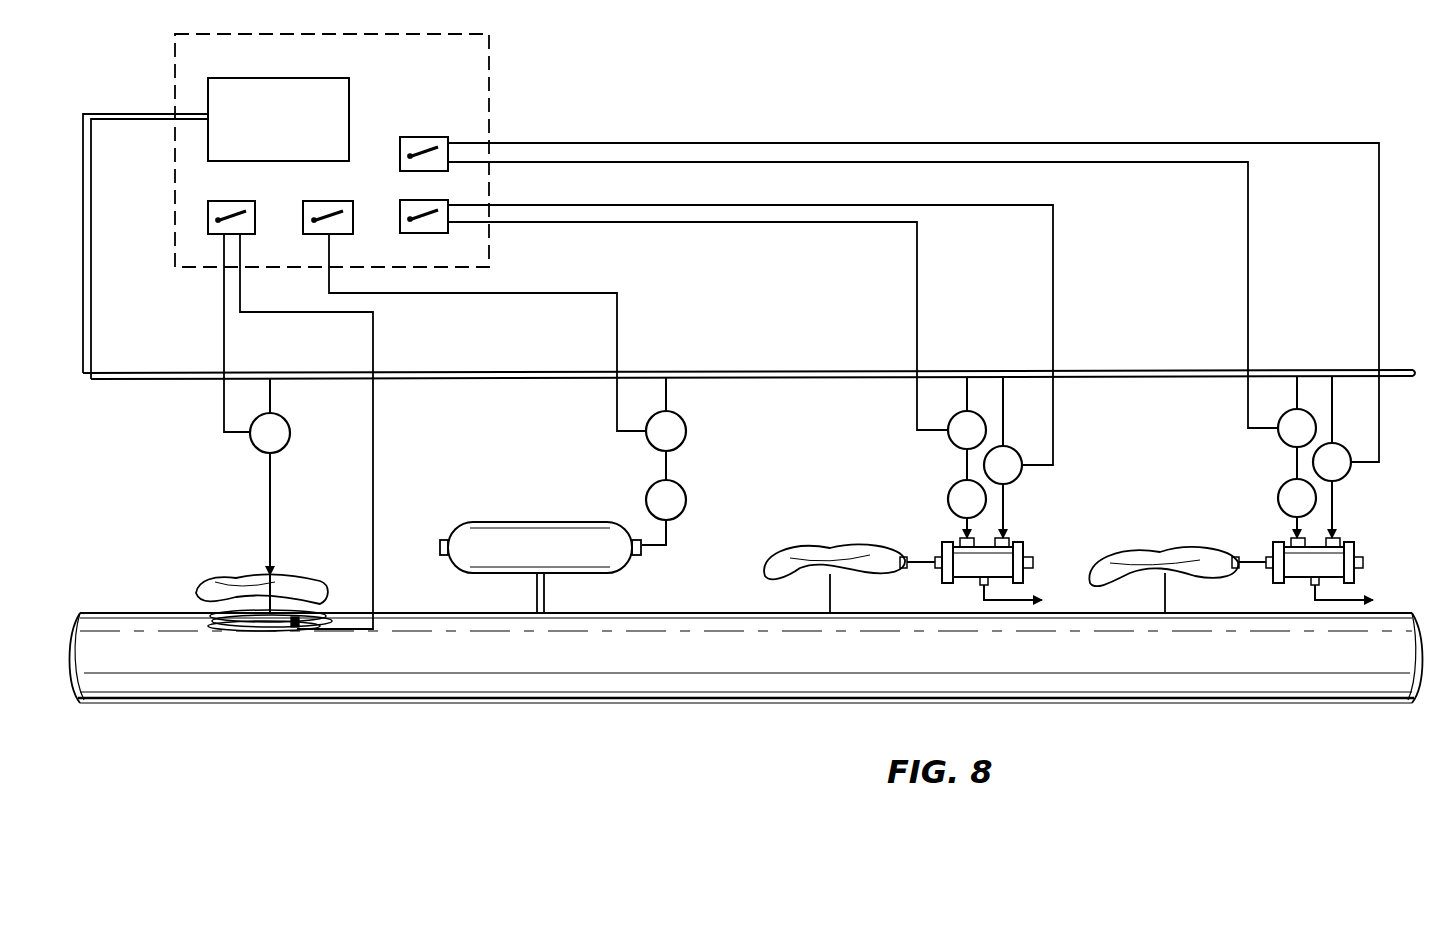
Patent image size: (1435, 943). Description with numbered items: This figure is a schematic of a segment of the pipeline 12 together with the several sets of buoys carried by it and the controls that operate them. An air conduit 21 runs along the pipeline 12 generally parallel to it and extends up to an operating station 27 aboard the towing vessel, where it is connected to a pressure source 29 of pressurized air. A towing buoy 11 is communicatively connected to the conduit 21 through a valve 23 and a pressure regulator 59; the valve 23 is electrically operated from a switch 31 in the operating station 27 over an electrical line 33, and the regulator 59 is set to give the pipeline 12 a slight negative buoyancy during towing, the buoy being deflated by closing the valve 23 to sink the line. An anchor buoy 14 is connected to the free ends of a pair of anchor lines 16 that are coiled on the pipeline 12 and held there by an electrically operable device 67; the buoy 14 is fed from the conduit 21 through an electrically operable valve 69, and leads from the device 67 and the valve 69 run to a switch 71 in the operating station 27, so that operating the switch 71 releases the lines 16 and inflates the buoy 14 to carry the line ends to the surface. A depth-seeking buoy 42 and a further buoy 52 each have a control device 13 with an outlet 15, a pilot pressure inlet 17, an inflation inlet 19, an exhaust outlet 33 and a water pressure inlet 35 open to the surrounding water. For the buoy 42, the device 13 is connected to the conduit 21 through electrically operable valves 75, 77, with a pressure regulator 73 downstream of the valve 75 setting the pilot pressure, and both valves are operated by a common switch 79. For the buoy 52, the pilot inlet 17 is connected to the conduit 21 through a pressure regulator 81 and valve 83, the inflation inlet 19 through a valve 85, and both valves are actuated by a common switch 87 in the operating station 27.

The towing buoy 11 is at (506, 522).
The pipeline 12 is at (736, 687).
The control device 13 is at (1149, 548).
The anchor buoy 14 is at (223, 575).
The outlet 15 is at (935, 558).
The anchor lines 16 is at (226, 636).
The pilot pressure inlet 17 is at (969, 547).
The inflation inlet 19 is at (1009, 543).
The conduit 21 is at (795, 370).
The valve 23 is at (688, 431).
The operating station 27 is at (492, 68).
The pressure source 29 is at (291, 129).
The switch 31 is at (344, 201).
The electrical line 33 is at (555, 300).
The water pressure inlet 35 is at (1036, 564).
The buoy 42 is at (823, 546).
The buoy 52 is at (1160, 548).
The pressure regulator 59 is at (688, 500).
The electrically operable device 67 is at (296, 632).
The valve 69 is at (290, 440).
The switch 71 is at (245, 201).
The pressure regulator 73 is at (948, 500).
The valve 75 is at (949, 439).
The valve 77 is at (1022, 475).
The switch 79 is at (404, 236).
The pressure regulator 81 is at (1278, 492).
The valve 83 is at (1278, 437).
The valve 85 is at (1352, 473).
The switch 87 is at (430, 137).